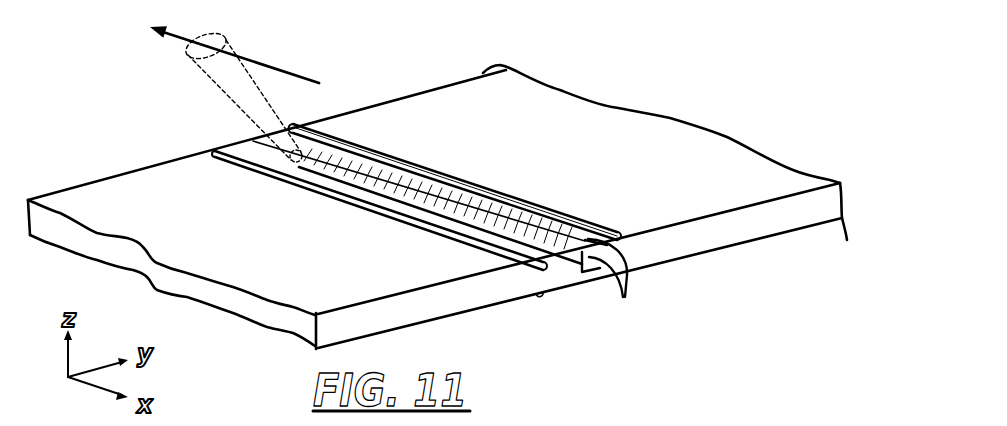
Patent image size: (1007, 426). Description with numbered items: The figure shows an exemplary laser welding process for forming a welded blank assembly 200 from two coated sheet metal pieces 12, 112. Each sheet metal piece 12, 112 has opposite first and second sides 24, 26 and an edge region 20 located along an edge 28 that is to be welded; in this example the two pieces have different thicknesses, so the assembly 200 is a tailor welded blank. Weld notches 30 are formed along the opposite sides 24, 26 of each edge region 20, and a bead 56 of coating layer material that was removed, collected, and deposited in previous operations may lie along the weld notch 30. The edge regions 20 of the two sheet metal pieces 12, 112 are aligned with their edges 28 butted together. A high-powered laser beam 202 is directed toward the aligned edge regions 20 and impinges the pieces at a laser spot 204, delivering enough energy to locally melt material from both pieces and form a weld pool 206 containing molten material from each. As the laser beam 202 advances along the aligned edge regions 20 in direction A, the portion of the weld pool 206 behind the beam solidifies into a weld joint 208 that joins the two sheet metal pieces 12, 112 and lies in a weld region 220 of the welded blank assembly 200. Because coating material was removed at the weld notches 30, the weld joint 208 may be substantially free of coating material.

The welded blank assembly 200 is at (682, 68).
The sheet metal piece 12 is at (772, 152).
The sheet metal piece 112 is at (76, 180).
The first side 24 is at (380, 120).
The edge region 20 is at (628, 218).
The laser spot 204 is at (262, 165).
The weld pool 206 is at (298, 162).
The weld joint 208 is at (428, 213).
The weld region 220 is at (490, 195).
The bead 56 is at (600, 228).
The second side 26 is at (666, 263).
The edge 28 is at (600, 282).
The weld notch 30 is at (622, 300).
The laser beam 202 is at (253, 78).